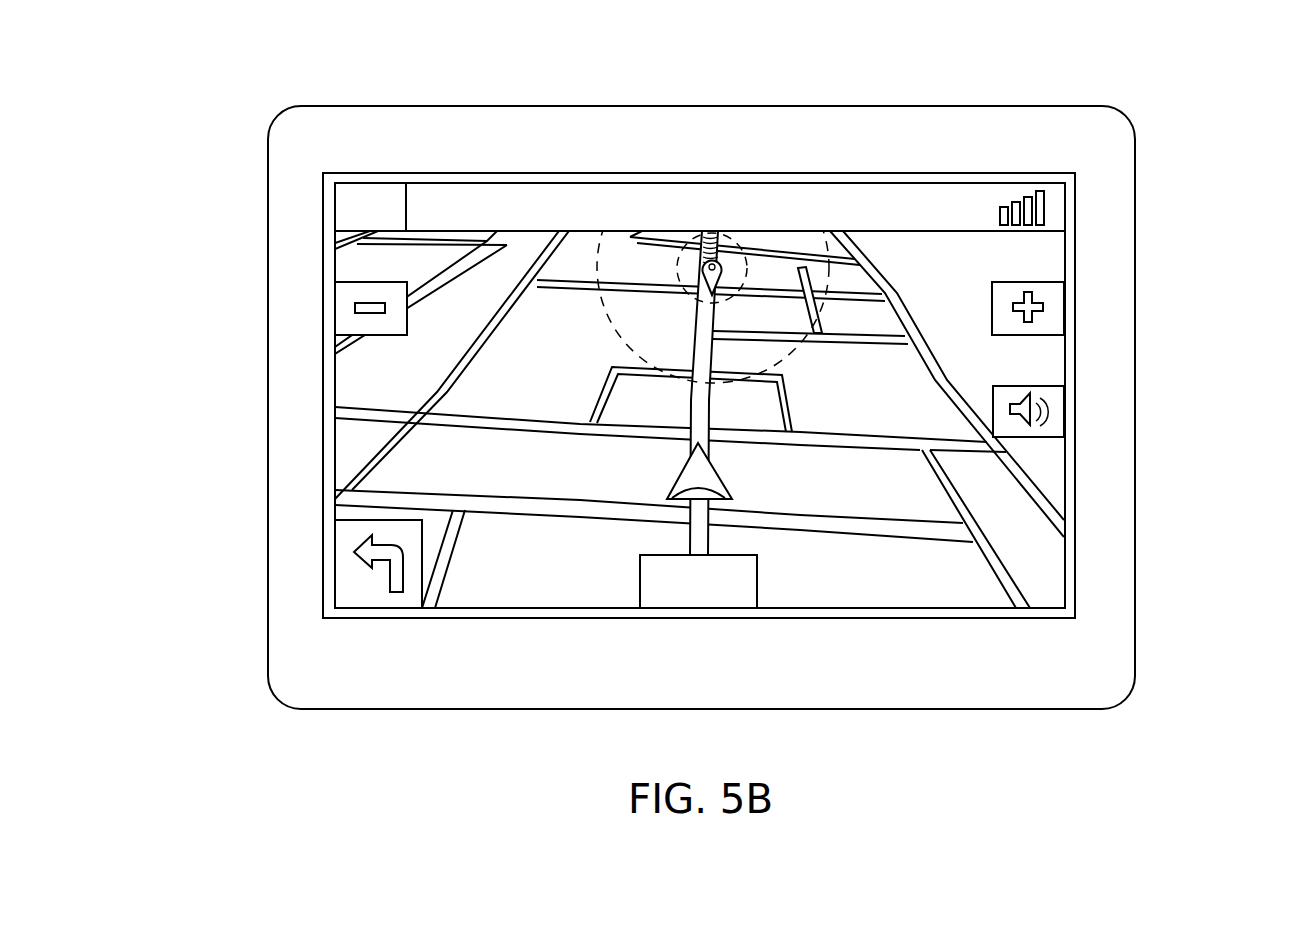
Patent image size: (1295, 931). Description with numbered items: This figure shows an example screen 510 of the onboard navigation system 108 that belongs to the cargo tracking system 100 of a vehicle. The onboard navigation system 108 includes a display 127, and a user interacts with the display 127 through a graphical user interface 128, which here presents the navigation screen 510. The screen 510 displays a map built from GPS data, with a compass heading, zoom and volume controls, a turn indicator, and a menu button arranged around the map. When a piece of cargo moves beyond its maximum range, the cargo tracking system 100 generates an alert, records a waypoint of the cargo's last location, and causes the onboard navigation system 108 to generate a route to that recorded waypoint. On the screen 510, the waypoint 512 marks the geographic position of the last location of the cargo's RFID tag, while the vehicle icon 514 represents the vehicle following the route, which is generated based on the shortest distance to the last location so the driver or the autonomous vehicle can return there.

The cargo tracking system 100 is at (701, 382).
The onboard navigation system 108 is at (195, 145).
The display 127 is at (323, 548).
The graphical user interface 128 is at (700, 399).
The screen 510 is at (905, 207).
The waypoint 512 is at (728, 283).
The vehicle icon 514 is at (708, 482).